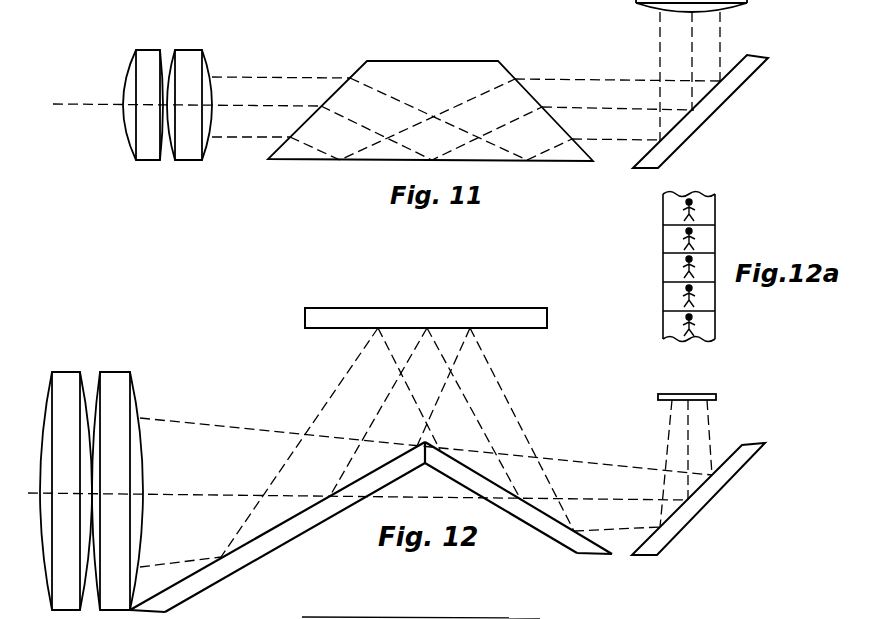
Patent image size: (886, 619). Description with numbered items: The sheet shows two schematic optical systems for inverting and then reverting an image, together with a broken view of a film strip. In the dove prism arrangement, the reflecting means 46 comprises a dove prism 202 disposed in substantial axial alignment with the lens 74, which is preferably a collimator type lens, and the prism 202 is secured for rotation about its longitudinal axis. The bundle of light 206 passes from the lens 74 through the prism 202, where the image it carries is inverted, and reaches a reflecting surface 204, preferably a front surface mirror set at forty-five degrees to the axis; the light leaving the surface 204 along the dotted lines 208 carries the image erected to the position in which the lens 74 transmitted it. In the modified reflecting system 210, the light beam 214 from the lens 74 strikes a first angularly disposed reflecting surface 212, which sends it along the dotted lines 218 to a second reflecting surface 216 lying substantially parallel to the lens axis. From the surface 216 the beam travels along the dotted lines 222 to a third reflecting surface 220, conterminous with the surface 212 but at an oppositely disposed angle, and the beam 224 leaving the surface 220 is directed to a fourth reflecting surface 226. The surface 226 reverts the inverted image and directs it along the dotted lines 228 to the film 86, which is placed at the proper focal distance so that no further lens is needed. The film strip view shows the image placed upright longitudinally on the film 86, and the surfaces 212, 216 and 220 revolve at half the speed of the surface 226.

In FIG. 11, the lens 74 is at (152, 50).
In FIG. 12, the lens 74 is at (110, 372).
In FIG. 11, the bundle of light 206 is at (235, 137).
In FIG. 11, the reflecting means 46 is at (430, 91).
In FIG. 11, the dove prism 202 is at (445, 72).
In FIG. 11, the reflecting surface 204 is at (747, 55).
In FIG. 11, the dotted lines (image transmitted to lens) 208 is at (692, 44).
In FIG. 12A, the film 86 is at (689, 267).
In FIG. 12, the film 86 is at (717, 395).
In FIG. 12, the dotted lines (light beam from lens) 214 is at (165, 563).
In FIG. 12, the second reflecting surface 216 is at (495, 328).
In FIG. 12, the dotted lines (light beam to second reflecting surface) 218 is at (441, 388).
In FIG. 12, the dotted lines (light beam to third reflecting surface) 222 is at (416, 403).
In FIG. 12, the modified reflecting system 210 is at (376, 490).
In FIG. 12, the first angularly disposed reflecting surface 212 is at (237, 526).
In FIG. 12, the third reflecting surface 220 is at (542, 512).
In FIG. 12, the dotted lines (beam leaving third reflecting surface) 224 is at (602, 530).
In FIG. 12, the fourth reflecting surface 226 is at (760, 444).
In FIG. 12, the dotted lines (light beam to film) 228 is at (670, 435).